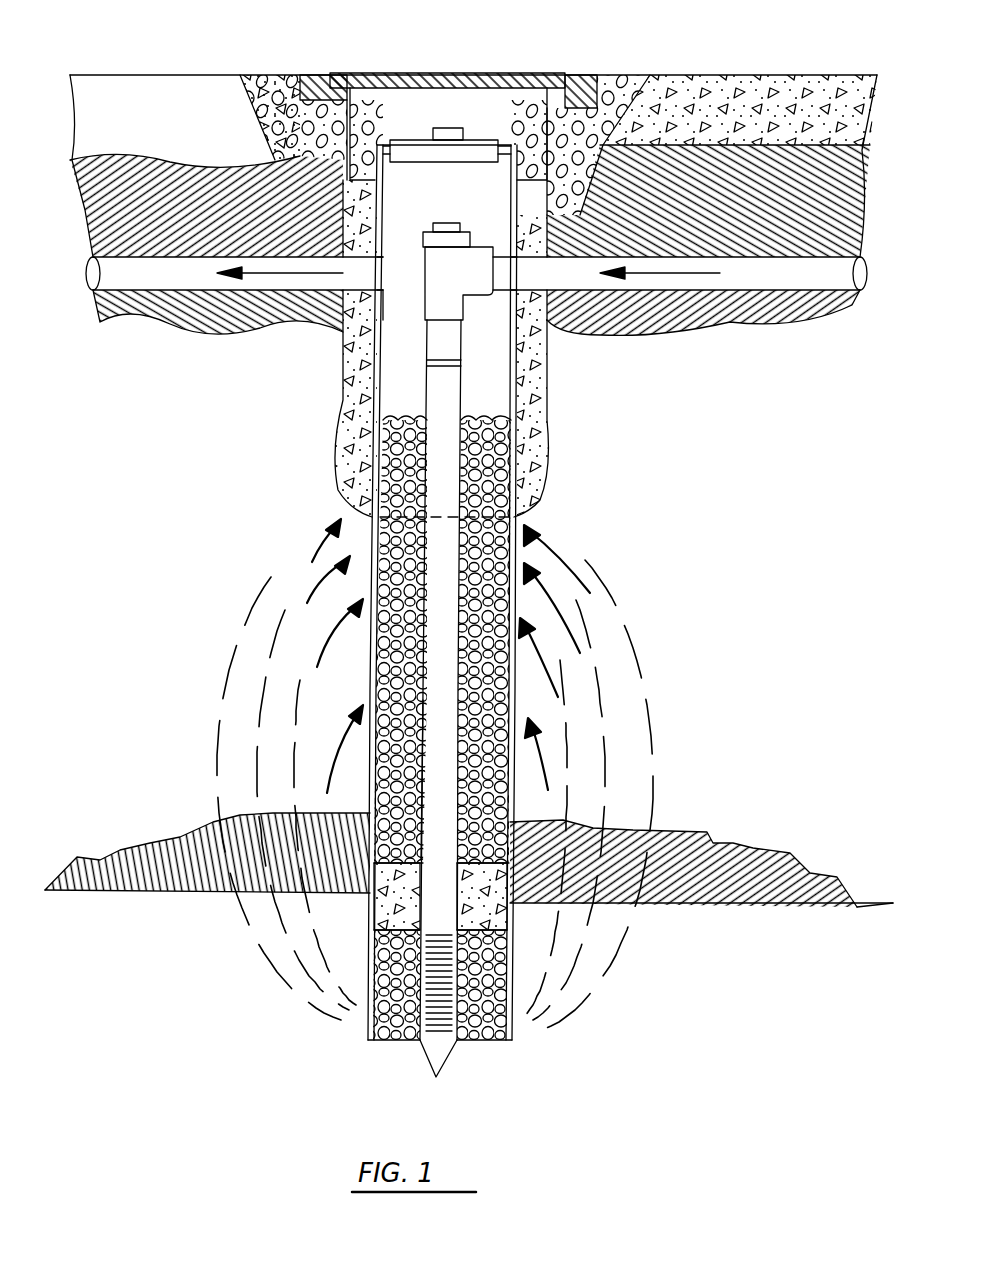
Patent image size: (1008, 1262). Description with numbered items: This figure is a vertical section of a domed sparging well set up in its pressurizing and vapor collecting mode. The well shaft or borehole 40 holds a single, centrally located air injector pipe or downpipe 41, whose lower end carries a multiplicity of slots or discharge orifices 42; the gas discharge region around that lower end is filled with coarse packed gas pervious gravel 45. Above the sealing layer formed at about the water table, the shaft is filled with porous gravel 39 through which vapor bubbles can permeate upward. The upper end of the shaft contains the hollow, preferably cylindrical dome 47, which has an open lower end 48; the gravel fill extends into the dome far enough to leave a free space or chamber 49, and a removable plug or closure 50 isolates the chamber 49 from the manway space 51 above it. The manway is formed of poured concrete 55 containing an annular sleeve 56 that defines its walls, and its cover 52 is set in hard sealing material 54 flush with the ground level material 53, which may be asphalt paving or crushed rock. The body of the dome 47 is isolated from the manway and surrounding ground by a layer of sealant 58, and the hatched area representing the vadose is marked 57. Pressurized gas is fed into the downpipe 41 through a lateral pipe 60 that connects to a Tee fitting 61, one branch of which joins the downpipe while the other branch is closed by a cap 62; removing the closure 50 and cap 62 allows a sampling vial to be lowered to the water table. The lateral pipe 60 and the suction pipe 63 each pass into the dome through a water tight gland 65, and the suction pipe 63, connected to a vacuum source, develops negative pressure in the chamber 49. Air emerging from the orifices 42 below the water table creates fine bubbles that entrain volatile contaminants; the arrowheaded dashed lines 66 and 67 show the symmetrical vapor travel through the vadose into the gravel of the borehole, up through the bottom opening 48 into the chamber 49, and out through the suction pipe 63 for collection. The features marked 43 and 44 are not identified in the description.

The porous gravel 39 is at (512, 680).
The well shaft 40 is at (520, 525).
The air injector pipe 41 is at (440, 662).
The discharge orifices 42 is at (460, 1040).
The drive point 43 is at (432, 1058).
The ground surface 44 is at (880, 900).
The coarse packed gas pervious gravel 45 is at (515, 958).
The dome 47 is at (375, 378).
The open lower end 48 is at (370, 545).
The chamber 49 is at (370, 318).
The plug or closure 50 is at (470, 150).
The manway space 51 is at (418, 105).
The cover 52 is at (510, 73).
The ground level material 53 is at (688, 90).
The hard sealing material 54 is at (580, 75).
The poured concrete 55 is at (268, 88).
The annular sleeve 56 is at (350, 118).
The vadose 57 is at (205, 315).
The layer of sealant 58 is at (545, 375).
The lateral pipe 60 is at (868, 278).
The Tee fitting 61 is at (435, 283).
The cap 62 is at (470, 232).
The suction pipe 63 is at (100, 292).
The water tight gland 65 is at (510, 298).
The arrowheaded dashed line 66 is at (243, 648).
The arrowheaded dashed line 67 is at (642, 702).